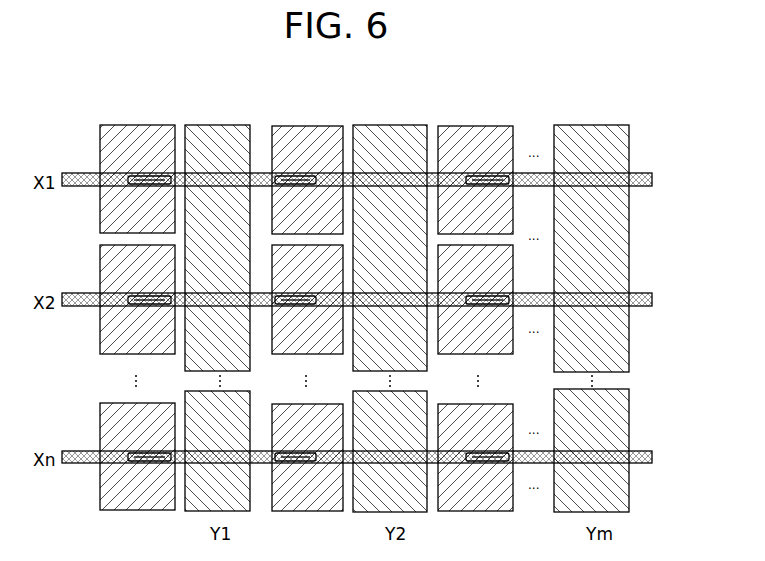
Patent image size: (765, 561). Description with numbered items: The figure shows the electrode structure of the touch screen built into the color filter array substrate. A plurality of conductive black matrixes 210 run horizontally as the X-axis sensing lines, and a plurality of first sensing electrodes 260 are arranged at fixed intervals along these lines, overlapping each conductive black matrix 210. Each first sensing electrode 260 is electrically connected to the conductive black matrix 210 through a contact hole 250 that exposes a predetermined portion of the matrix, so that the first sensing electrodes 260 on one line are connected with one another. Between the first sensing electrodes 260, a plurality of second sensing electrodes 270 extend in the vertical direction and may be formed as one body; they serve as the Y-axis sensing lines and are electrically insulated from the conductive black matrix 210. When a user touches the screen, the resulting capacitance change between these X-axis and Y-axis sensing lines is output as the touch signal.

The conductive black matrix 210 is at (653, 180).
The contact hole 250 is at (130, 186).
The first sensing electrode 260 is at (142, 126).
The second sensing electrode 270 is at (231, 126).